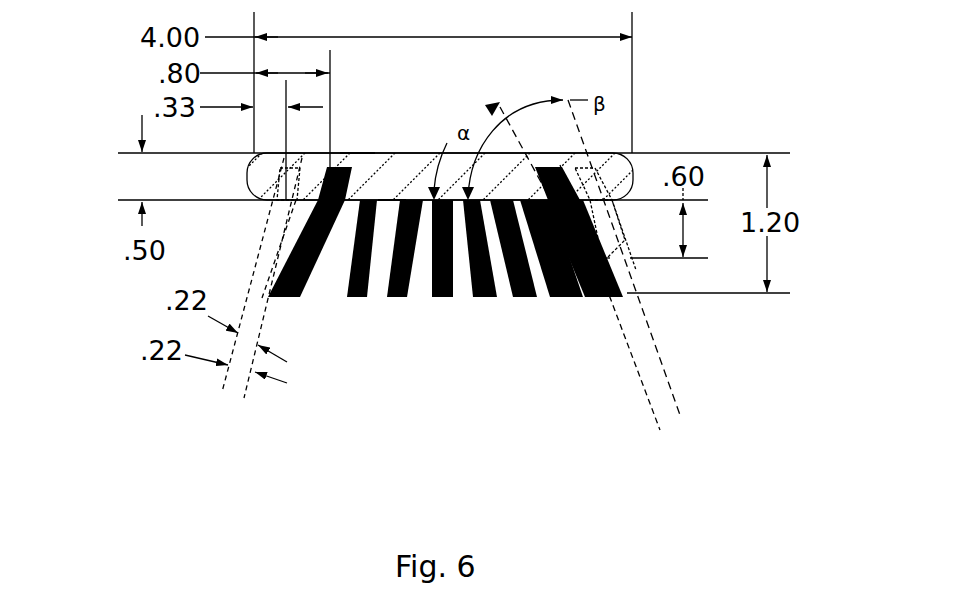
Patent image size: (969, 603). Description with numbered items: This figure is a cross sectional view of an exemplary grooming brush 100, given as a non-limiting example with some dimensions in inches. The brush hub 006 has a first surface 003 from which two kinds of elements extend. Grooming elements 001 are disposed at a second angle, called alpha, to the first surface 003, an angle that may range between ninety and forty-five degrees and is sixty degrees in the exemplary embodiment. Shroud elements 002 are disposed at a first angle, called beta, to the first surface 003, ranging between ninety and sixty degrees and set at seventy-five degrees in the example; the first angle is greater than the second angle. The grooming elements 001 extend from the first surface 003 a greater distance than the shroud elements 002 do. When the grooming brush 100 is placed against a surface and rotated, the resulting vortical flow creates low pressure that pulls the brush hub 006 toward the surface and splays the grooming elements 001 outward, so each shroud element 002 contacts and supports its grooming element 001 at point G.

The grooming brush 100 is at (672, 116).
The grooming elements 001 is at (440, 297).
The brush hub 006 is at (357, 155).
The first surface 003 is at (392, 200).
The shroud elements 002 is at (620, 237).
The point G is at (600, 257).